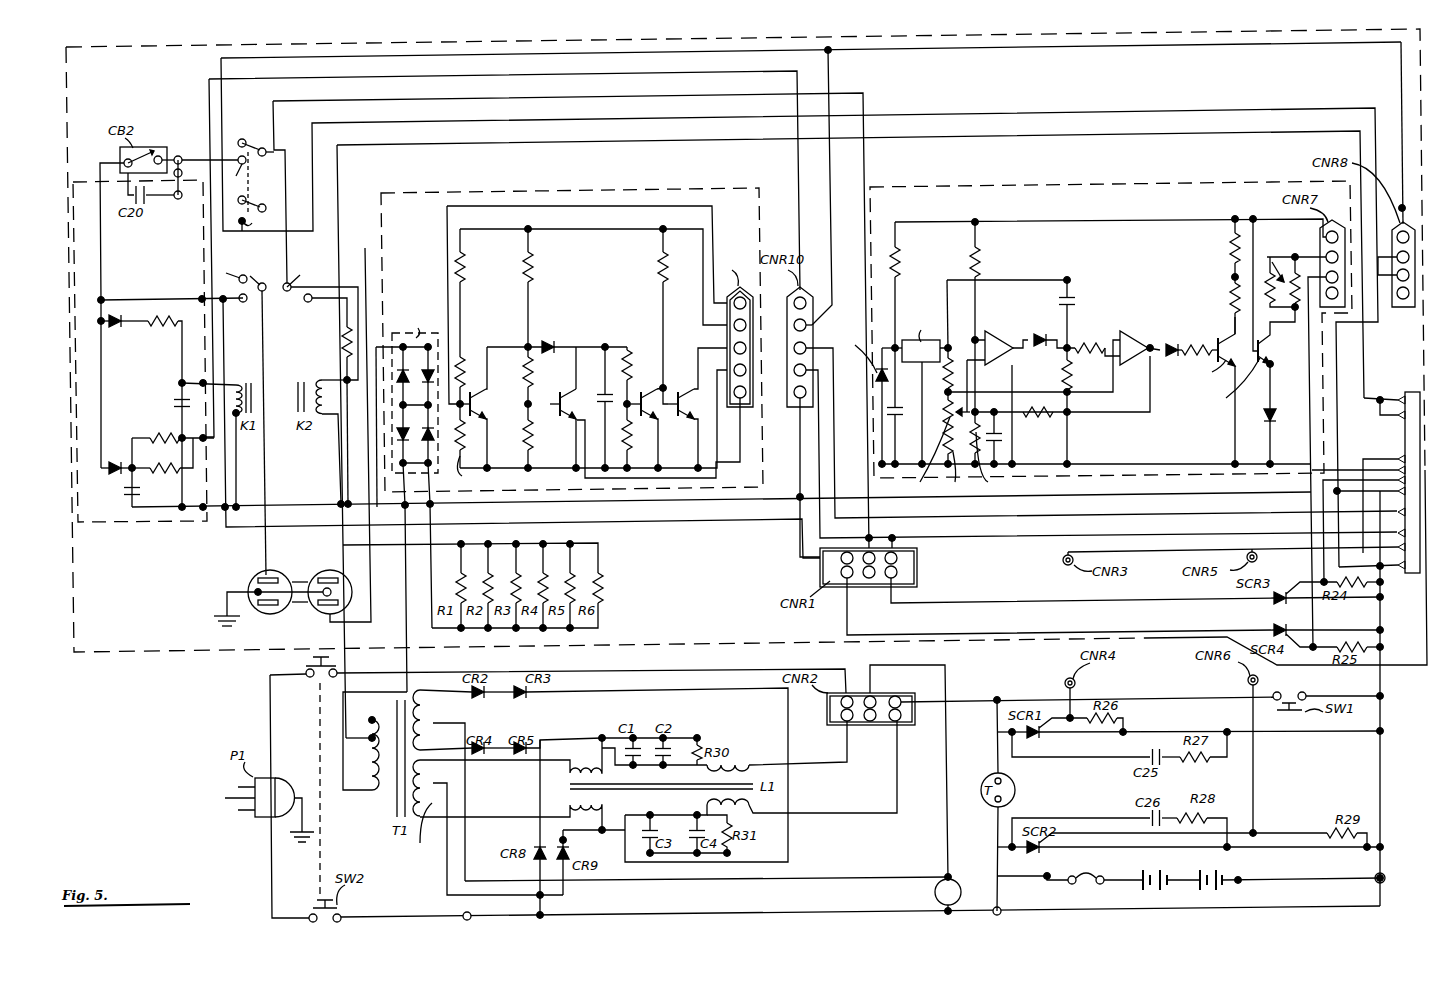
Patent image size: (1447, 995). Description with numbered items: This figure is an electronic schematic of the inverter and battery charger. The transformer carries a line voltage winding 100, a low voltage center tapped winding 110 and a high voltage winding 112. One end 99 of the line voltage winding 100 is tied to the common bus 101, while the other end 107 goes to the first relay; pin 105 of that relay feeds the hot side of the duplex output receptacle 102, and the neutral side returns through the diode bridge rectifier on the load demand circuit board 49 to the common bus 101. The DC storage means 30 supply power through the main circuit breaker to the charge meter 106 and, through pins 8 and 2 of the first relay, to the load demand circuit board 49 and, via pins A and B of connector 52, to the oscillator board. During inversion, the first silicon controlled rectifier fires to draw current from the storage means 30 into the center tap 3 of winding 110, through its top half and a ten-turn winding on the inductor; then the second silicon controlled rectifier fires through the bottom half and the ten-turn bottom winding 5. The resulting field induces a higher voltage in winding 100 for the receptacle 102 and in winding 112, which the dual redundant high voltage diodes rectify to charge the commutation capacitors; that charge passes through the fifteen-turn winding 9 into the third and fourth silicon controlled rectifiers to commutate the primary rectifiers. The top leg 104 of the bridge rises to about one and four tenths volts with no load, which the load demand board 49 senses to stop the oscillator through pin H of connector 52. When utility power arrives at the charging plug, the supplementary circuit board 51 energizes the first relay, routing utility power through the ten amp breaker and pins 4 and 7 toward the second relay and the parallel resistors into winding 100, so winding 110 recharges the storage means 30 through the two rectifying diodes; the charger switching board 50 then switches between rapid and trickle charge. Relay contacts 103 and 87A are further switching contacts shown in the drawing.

The relay K1 contact pin 2 is at (255, 227).
The center tap of low voltage winding 3 is at (419, 832).
The relay K1 contact pin 4 is at (236, 175).
The ten-turn bottom winding of inductor L1 5 is at (589, 754).
The relay K1 contact pin 7 is at (259, 144).
The relay K1 contact pin 8 is at (252, 183).
The fifteen-turn winding inductor 9 is at (745, 758).
The DC storage means 30 is at (1155, 892).
The load demand circuit board 49 is at (417, 223).
The charger switching board 50 is at (935, 216).
The supplementary circuit board 51 is at (96, 203).
The connector 52 is at (1398, 396).
The relay contact 87A is at (297, 280).
The end of line voltage winding 99 is at (372, 808).
The line voltage winding 100 is at (372, 759).
The common bus 101 is at (493, 502).
The duplex output receptacle 102 is at (255, 570).
The relay contact 103 is at (238, 276).
The top leg of diode bridge rectifier 104 is at (437, 342).
The relay K1 pin 105 is at (261, 280).
The charge meter 106 is at (933, 890).
The end of line voltage winding 107 is at (381, 709).
The low voltage center tapped winding 110 is at (438, 800).
The high voltage winding 112 is at (432, 707).